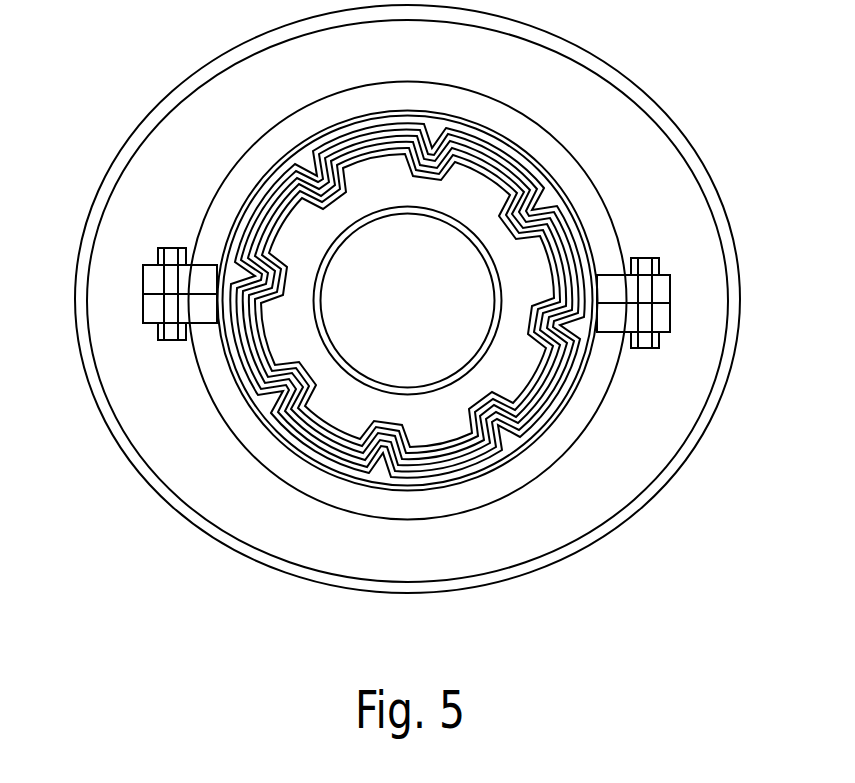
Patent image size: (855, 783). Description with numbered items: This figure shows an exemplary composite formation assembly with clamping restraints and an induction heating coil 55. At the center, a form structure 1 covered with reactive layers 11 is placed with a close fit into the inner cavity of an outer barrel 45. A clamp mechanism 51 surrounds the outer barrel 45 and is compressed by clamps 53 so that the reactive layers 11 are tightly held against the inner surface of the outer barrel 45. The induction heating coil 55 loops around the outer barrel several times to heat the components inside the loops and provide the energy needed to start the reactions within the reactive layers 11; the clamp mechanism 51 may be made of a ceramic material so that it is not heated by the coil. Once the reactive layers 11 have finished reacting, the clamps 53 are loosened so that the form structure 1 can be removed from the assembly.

The form structure 1 is at (540, 268).
The reactive layers 11 is at (512, 432).
The outer barrel 45 is at (583, 378).
The clamp mechanism 51 is at (563, 150).
The clamps 53 is at (143, 302).
The induction heating coil 55 is at (115, 159).